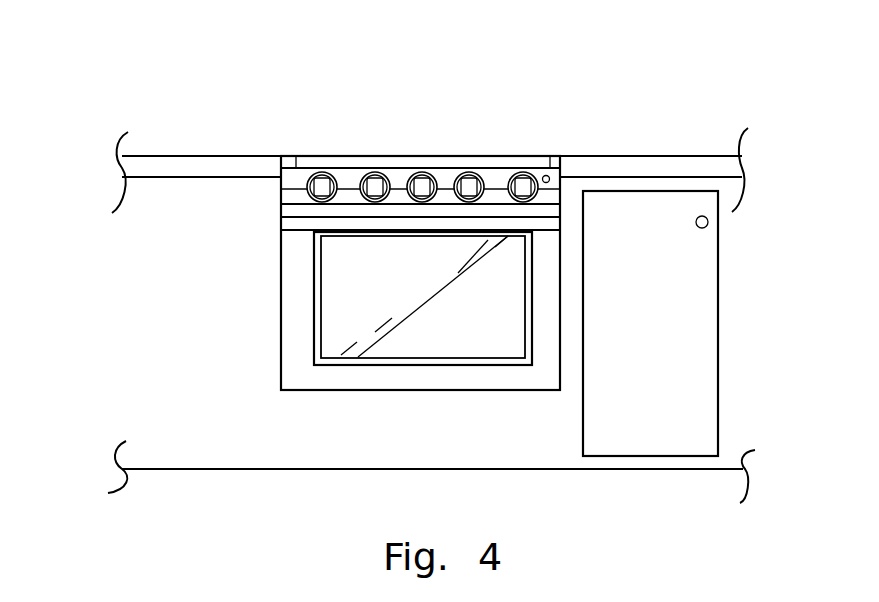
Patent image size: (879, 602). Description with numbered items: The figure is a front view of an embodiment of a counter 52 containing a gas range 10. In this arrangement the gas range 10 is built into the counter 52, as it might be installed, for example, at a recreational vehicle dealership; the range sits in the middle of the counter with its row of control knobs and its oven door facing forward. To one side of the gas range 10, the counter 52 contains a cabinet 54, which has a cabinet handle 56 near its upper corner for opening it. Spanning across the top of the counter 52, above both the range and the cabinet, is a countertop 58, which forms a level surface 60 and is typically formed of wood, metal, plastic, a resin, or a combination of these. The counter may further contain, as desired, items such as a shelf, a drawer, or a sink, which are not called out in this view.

The gas range 10 is at (458, 66).
The counter 52 is at (118, 288).
The cabinet 54 is at (646, 191).
The cabinet handle 56 is at (706, 227).
The countertop 58 is at (175, 155).
The level surface 60 is at (225, 155).